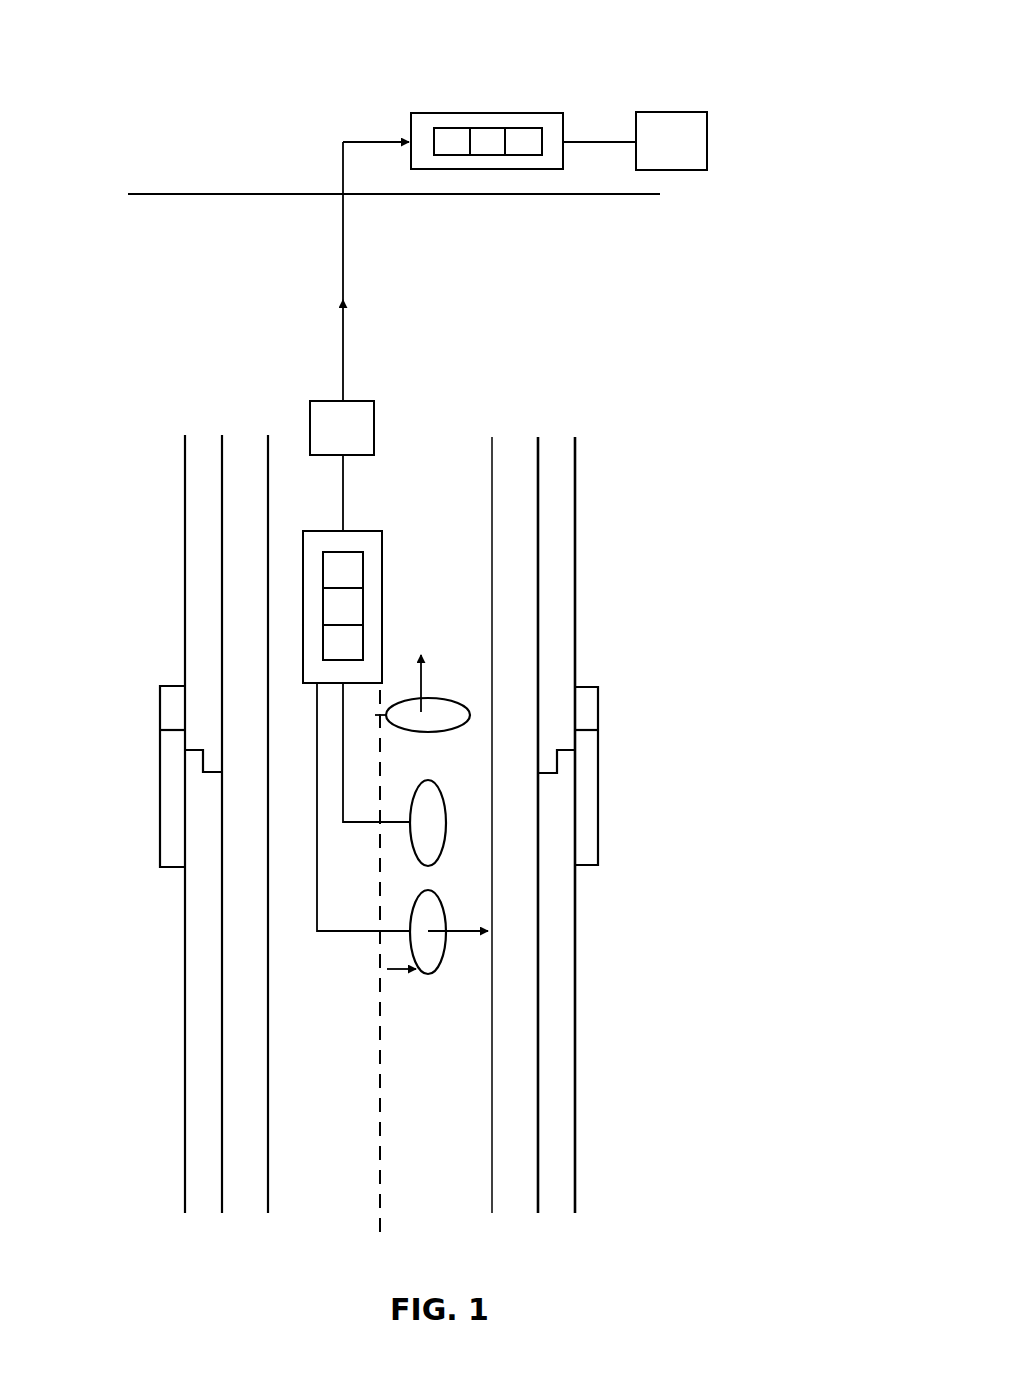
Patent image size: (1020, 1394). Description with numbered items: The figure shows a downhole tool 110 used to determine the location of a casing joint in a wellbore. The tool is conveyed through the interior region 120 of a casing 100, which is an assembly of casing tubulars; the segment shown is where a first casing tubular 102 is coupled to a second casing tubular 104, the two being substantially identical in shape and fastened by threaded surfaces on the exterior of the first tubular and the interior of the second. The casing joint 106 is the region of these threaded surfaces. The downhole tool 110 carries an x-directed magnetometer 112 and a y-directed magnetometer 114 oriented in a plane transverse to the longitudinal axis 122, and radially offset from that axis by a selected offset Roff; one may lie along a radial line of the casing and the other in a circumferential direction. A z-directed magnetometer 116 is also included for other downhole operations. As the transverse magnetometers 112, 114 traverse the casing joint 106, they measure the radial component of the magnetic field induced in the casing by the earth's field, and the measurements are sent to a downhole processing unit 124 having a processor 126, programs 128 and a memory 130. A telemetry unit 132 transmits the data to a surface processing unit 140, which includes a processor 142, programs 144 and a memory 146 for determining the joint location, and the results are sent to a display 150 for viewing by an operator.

The casing 100 is at (170, 63).
The first casing tubular 102 is at (575, 505).
The second casing tubular 104 is at (565, 1172).
The casing joint 106 is at (588, 710).
The downhole tool 110 is at (268, 452).
The x-directed magnetometer 112 is at (446, 942).
The y-directed magnetometer 114 is at (446, 823).
The z-directed magnetometer 116 is at (470, 715).
The interior region 120 is at (515, 436).
The longitudinal axis 122 is at (380, 1085).
The processing unit 124 is at (363, 531).
The processor 126 is at (363, 572).
The programs 128 is at (363, 607).
The memory 130 is at (363, 645).
The telemetry unit 132 is at (357, 401).
The processing unit 140 is at (483, 113).
The processor 142 is at (525, 128).
The programs 144 is at (487, 155).
The memory 146 is at (452, 128).
The display 150 is at (678, 112).